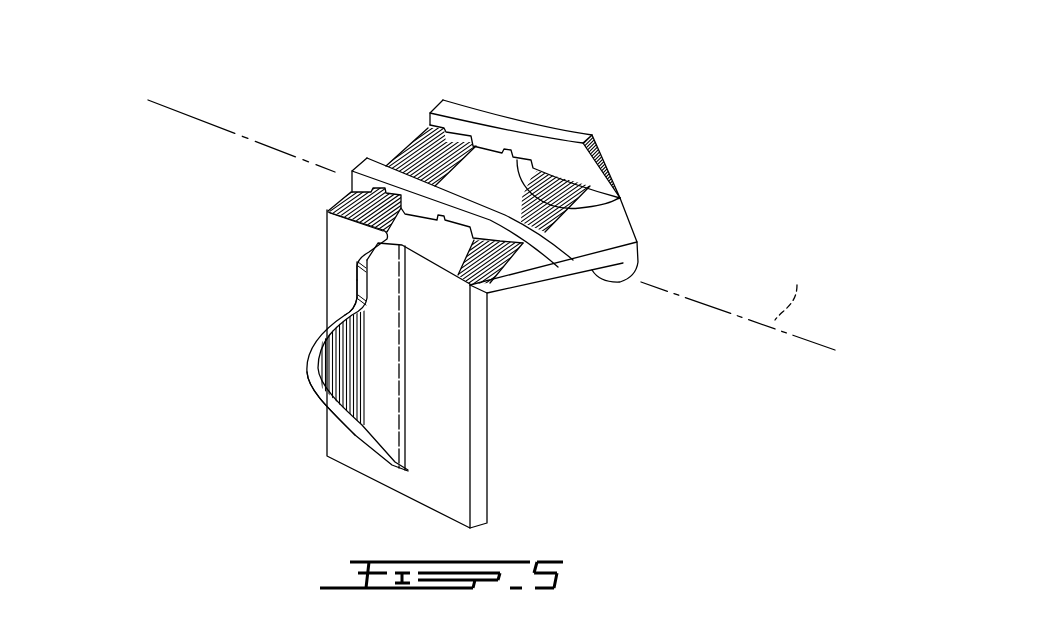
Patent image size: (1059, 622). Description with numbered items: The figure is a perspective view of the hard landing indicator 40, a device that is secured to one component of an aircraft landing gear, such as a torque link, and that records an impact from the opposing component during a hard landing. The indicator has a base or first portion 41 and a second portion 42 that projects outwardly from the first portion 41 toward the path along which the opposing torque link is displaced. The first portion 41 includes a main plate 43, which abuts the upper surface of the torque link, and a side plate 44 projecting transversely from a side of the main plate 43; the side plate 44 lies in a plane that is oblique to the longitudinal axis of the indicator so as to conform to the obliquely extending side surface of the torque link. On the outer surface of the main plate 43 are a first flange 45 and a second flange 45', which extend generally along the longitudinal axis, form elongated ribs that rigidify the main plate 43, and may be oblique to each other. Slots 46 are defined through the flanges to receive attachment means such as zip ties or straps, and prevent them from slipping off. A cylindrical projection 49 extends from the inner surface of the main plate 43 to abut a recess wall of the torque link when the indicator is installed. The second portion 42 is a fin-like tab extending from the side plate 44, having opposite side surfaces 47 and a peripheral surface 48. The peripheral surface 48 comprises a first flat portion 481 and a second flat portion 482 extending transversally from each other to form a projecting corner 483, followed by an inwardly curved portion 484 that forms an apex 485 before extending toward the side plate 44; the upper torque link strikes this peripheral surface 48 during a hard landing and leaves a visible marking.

The hard landing indicator 40 is at (712, 98).
The first portion 41 is at (318, 121).
The second portion 42 is at (285, 360).
The main plate 43 is at (591, 134).
The side plate 44 is at (447, 450).
The first flange 45 is at (525, 107).
The second flange 45' is at (462, 274).
The slot 46 is at (620, 198).
The side surface of the tab 47 is at (358, 393).
The peripheral surface 48 is at (296, 326).
The first flat portion 481 is at (376, 244).
The second flat portion 482 is at (360, 283).
The projecting corner 483 is at (363, 262).
The inwardly curved portion 484 is at (343, 316).
The apex 485 is at (314, 377).
The projection 49 is at (617, 281).